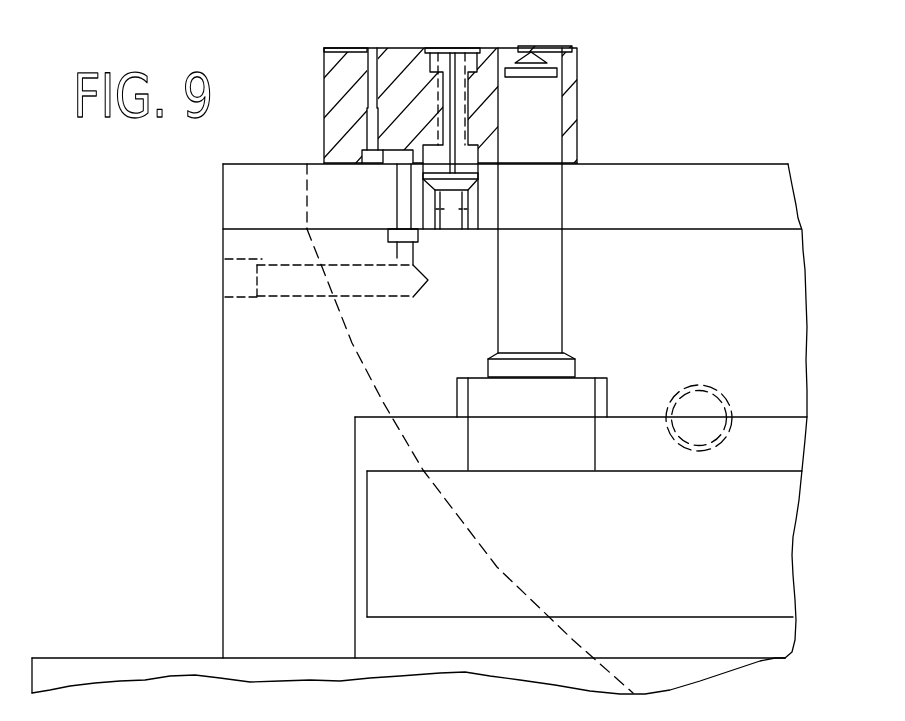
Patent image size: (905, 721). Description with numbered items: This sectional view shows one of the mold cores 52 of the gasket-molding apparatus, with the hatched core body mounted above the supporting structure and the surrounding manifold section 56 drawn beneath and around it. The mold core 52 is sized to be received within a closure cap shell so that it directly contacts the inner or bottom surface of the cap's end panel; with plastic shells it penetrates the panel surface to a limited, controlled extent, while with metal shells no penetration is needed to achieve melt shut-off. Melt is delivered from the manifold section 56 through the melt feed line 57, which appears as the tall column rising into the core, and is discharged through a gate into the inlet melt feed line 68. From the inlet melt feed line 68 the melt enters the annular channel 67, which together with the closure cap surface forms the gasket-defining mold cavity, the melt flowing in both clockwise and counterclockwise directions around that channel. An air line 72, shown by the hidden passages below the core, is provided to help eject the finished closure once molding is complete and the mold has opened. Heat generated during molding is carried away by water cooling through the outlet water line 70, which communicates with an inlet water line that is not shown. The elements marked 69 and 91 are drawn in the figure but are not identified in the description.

The mold core 52 is at (571, 74).
The manifold section 56 is at (767, 552).
The melt feed line 57 is at (553, 303).
The annular channel 67 is at (338, 47).
The inlet melt feed line 68 is at (531, 47).
The pin 69 is at (353, 47).
The outlet water line 70 is at (242, 297).
The air line 72 is at (452, 225).
The pin foot 91 is at (375, 166).